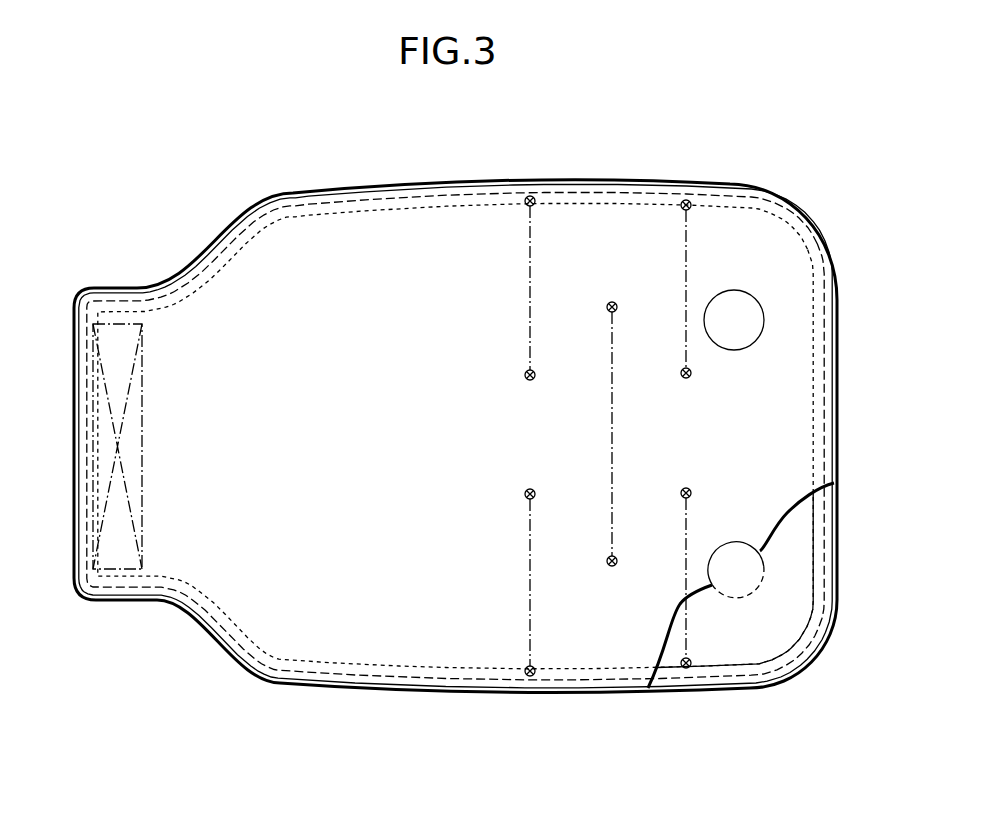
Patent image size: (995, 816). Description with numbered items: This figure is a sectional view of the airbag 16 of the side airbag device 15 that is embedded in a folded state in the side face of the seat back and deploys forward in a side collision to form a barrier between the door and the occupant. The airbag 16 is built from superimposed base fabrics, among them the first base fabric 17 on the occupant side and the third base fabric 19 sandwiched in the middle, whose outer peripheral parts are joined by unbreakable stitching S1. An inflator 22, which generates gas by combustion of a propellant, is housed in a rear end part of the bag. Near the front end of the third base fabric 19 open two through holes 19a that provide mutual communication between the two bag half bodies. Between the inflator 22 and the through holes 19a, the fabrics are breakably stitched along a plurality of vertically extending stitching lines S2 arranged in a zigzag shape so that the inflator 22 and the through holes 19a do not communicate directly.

The side airbag device 15 is at (455, 391).
The airbag 16 is at (370, 180).
The first base fabric 17 is at (752, 638).
The third base fabric 19 is at (403, 443).
The through holes 19a is at (758, 321).
The inflator 22 is at (144, 421).
The unbreakable stitching S1 is at (377, 679).
The stitching lines S2 is at (530, 297).